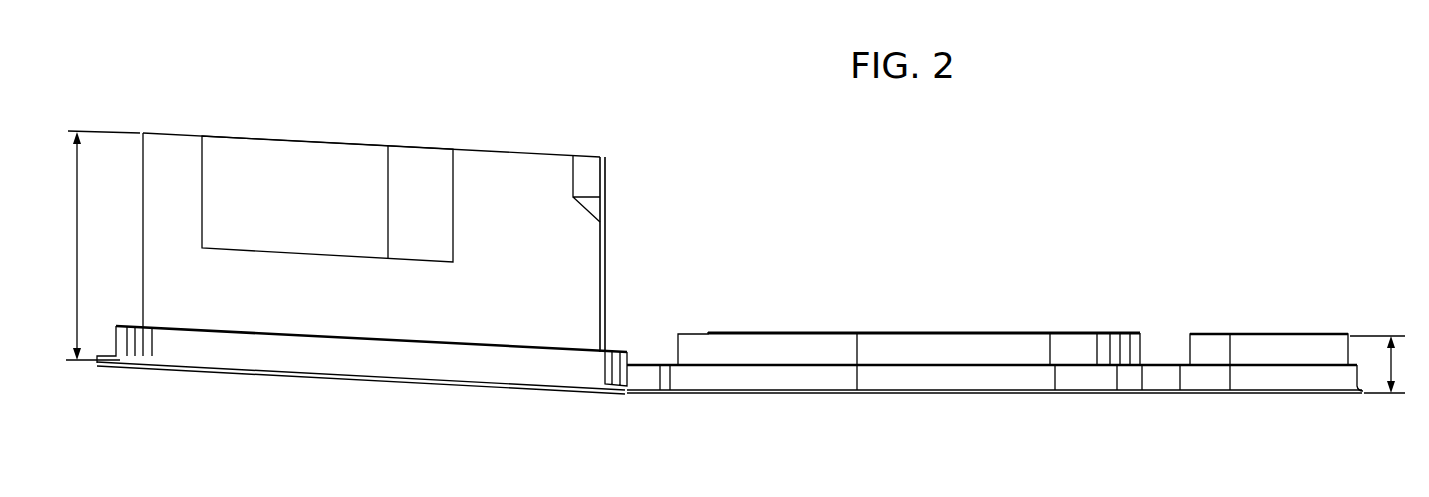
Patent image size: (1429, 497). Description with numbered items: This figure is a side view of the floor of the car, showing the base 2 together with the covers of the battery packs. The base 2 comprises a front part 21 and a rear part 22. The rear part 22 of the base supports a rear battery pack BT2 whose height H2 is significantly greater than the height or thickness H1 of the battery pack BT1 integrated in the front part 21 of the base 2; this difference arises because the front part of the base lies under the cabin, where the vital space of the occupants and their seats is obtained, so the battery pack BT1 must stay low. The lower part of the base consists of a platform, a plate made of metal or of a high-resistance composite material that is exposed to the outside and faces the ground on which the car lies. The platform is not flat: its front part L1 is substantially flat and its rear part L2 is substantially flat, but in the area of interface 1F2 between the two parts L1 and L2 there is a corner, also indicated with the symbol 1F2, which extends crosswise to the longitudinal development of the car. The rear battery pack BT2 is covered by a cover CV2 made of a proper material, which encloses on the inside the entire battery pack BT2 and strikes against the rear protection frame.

The base 2 is at (1026, 210).
The front part 21 is at (1043, 400).
The rear part 22 is at (400, 388).
The front part of the platform L1 is at (800, 393).
The rear part of the platform L2 is at (236, 372).
The battery pack BT1 is at (960, 345).
The rear battery pack BT2 is at (505, 178).
The cover CV2 is at (605, 173).
The area of interface 1F2 is at (636, 395).
The height of the front battery pack H1 is at (1387, 364).
The height of the rear battery pack H2 is at (93, 245).